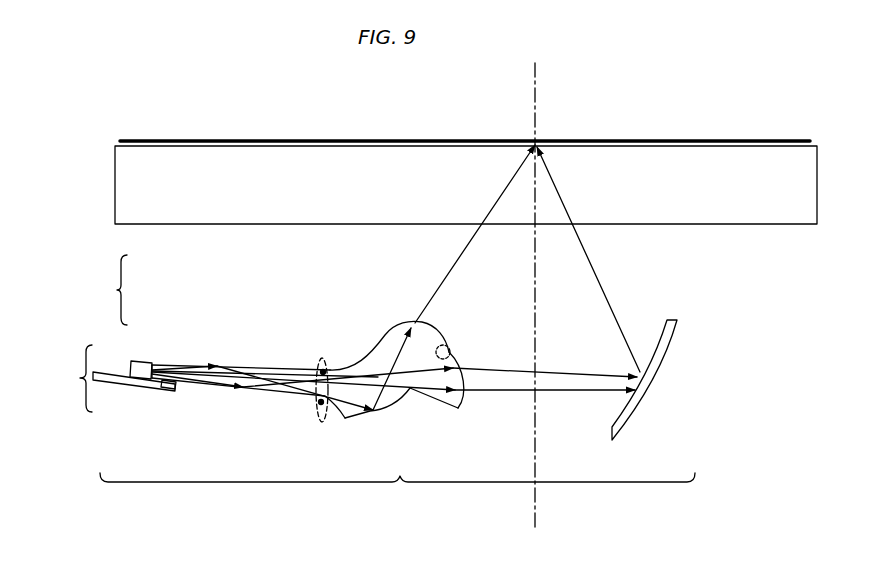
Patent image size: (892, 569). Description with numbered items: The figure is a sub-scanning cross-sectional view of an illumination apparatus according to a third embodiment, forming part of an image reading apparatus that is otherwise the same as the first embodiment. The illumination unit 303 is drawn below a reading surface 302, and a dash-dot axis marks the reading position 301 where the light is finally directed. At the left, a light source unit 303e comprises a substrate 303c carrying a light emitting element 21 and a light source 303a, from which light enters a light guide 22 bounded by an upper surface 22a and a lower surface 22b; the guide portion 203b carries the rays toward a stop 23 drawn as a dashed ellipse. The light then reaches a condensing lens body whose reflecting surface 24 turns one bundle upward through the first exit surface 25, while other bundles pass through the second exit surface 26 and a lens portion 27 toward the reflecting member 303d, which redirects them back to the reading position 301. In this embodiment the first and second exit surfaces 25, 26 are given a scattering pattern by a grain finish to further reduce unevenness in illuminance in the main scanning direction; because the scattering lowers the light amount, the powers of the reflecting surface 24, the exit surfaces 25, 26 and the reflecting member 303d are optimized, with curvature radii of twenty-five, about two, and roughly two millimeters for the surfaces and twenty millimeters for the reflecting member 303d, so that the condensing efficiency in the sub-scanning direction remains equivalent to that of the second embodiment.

The optical axis intersection point on screen 301 is at (540, 133).
The screen 302 is at (667, 152).
The optical unit 303 is at (365, 331).
The light source 303a is at (133, 361).
The substrate 303c is at (117, 385).
The reflecting member 303d is at (668, 338).
The light source unit 303e is at (121, 379).
The light emitting element 21 is at (163, 388).
The light guide 22 is at (217, 336).
The light guide upper surface 22a is at (205, 365).
The light guide lower surface 22b is at (188, 368).
The light guide portion 203b is at (238, 339).
The aperture / stop 23 is at (323, 357).
The reflecting surface 24 is at (390, 411).
The first exit surface 25 is at (428, 323).
The second exit surface 26 is at (461, 403).
The lens portion 27 is at (453, 350).